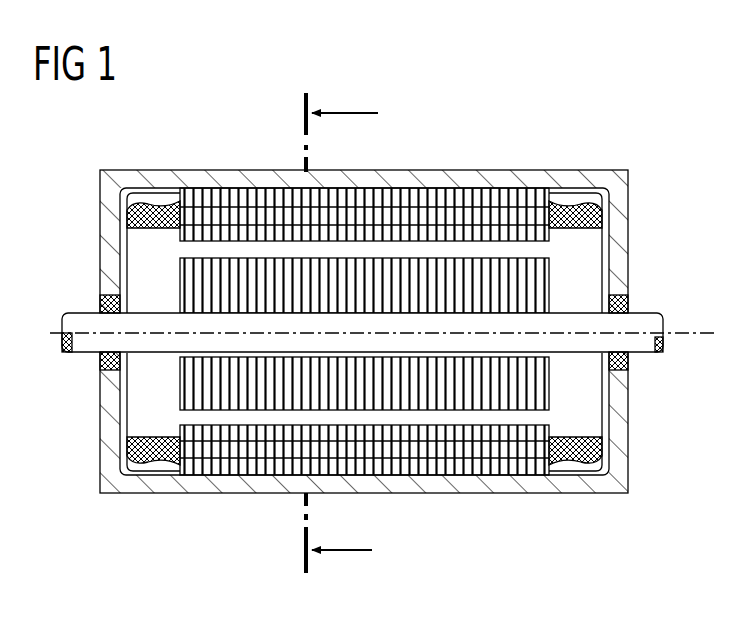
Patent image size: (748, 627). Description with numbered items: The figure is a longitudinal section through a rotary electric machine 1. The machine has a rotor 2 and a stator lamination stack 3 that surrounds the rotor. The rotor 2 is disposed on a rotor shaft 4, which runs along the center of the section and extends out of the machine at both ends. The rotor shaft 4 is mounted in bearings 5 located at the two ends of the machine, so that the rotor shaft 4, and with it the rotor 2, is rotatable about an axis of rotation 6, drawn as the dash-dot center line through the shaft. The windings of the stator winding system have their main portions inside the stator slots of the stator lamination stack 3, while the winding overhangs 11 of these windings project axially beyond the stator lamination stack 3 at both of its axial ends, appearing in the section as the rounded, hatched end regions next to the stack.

The rotary electric machine 1 is at (375, 324).
The rotor 2 is at (178, 385).
The stator lamination stack 3 is at (432, 476).
The rotor shaft 4 is at (83, 311).
The bearings 5 is at (100, 362).
The axis of rotation 6 is at (692, 332).
The winding overhangs 11 is at (135, 464).